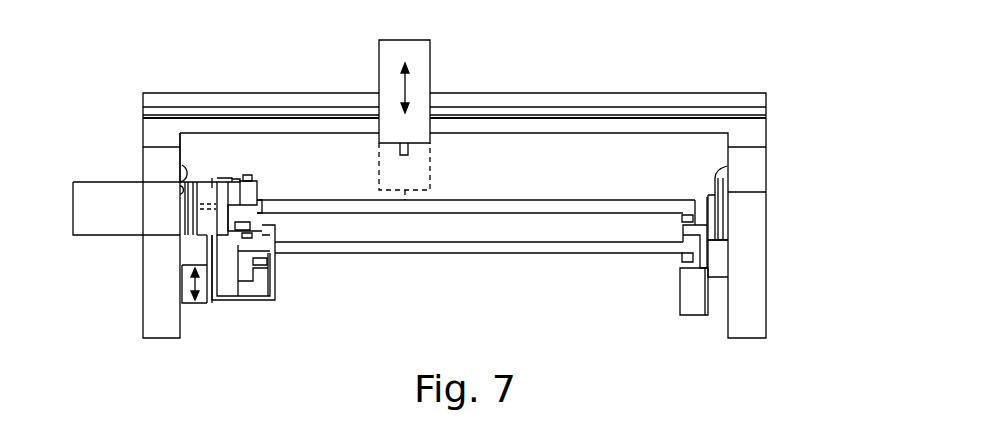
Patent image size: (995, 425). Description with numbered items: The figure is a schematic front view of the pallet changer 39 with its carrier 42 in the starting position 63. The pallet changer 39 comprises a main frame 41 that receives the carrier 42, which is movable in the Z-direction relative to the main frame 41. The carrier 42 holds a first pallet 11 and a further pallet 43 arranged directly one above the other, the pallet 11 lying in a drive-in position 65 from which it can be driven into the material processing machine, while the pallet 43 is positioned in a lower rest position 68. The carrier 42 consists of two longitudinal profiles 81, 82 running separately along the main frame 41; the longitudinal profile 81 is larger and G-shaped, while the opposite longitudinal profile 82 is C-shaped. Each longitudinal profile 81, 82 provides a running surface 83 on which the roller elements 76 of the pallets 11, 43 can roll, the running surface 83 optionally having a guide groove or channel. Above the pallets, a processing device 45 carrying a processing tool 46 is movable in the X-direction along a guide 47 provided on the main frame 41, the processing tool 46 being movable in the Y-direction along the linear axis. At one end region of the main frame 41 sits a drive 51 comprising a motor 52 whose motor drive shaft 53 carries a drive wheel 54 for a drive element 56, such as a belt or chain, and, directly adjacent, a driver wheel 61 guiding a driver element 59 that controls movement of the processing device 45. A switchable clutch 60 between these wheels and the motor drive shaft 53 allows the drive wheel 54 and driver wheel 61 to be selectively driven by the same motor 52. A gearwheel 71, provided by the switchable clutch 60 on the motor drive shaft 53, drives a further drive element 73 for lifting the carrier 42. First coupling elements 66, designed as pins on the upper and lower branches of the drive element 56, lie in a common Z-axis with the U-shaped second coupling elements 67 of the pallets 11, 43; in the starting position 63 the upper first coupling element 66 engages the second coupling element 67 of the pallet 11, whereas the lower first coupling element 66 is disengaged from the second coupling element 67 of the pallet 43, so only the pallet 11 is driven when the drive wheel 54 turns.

The pallet 11 is at (618, 202).
The pallet changer 39 is at (723, 62).
The main frame 41 is at (740, 321).
The carrier 42 is at (213, 320).
The further pallet 43 is at (480, 255).
The processing device 45 is at (552, 73).
The processing tool 46 is at (420, 67).
The guide 47 is at (749, 186).
The drive 51 is at (88, 160).
The motor 52 is at (88, 222).
The motor drive shaft 53 is at (204, 196).
The drive wheel 54 is at (233, 179).
The drive element 56 is at (223, 196).
The driver element 59 is at (182, 182).
The switchable clutch 60 is at (212, 190).
The driver wheel 61 is at (181, 188).
The starting position 63 is at (288, 318).
The drive-in position 65 is at (528, 196).
The first coupling element 66 is at (249, 176).
The second coupling element 67 is at (250, 195).
The rest position 68 is at (606, 262).
The gearwheel 71 is at (197, 237).
The further drive element 73 is at (727, 165).
The roller elements 76 is at (270, 230).
The longitudinal profile 81 is at (258, 302).
The longitudinal profile 82 is at (686, 282).
The running surface 83 is at (255, 225).